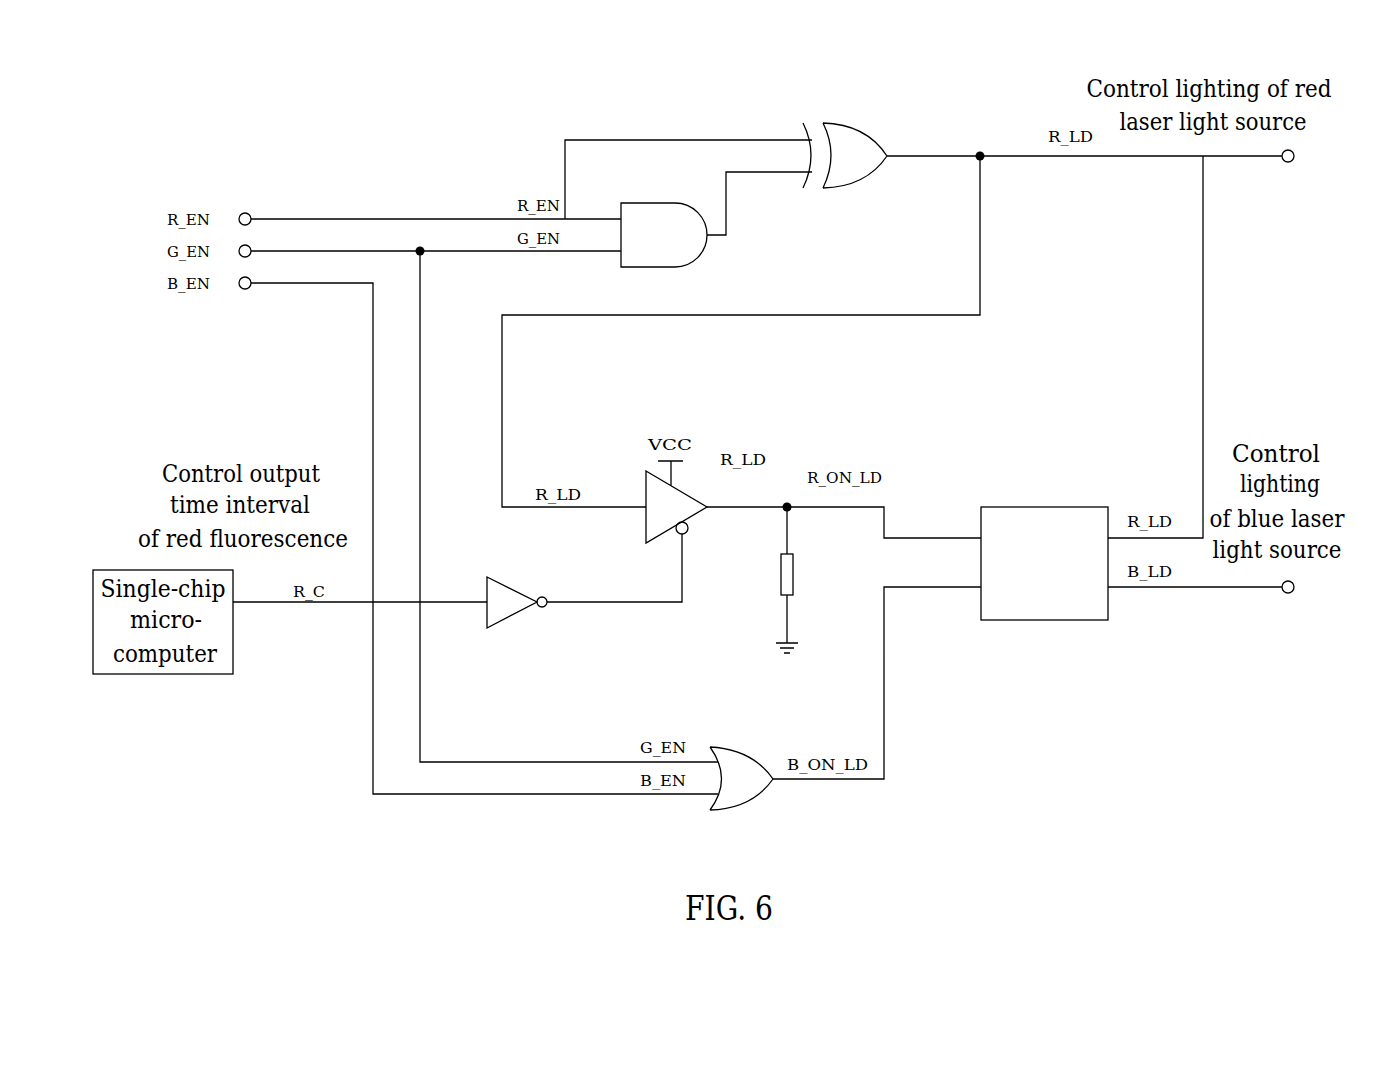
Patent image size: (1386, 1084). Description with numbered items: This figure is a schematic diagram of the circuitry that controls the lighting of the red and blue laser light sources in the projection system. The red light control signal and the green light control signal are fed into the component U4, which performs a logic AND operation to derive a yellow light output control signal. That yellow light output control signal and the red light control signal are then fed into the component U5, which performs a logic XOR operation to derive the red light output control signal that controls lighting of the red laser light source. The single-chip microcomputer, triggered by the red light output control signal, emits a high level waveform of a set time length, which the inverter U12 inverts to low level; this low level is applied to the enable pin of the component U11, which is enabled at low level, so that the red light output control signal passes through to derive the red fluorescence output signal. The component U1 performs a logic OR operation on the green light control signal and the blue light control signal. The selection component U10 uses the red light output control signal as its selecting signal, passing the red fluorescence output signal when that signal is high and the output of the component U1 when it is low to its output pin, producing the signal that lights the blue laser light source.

The component U1 is at (741, 764).
The component U4 is at (664, 217).
The component U5 is at (845, 140).
The selection component U10 is at (1044, 548).
The component U11 is at (654, 473).
The inverter U12 is at (511, 586).